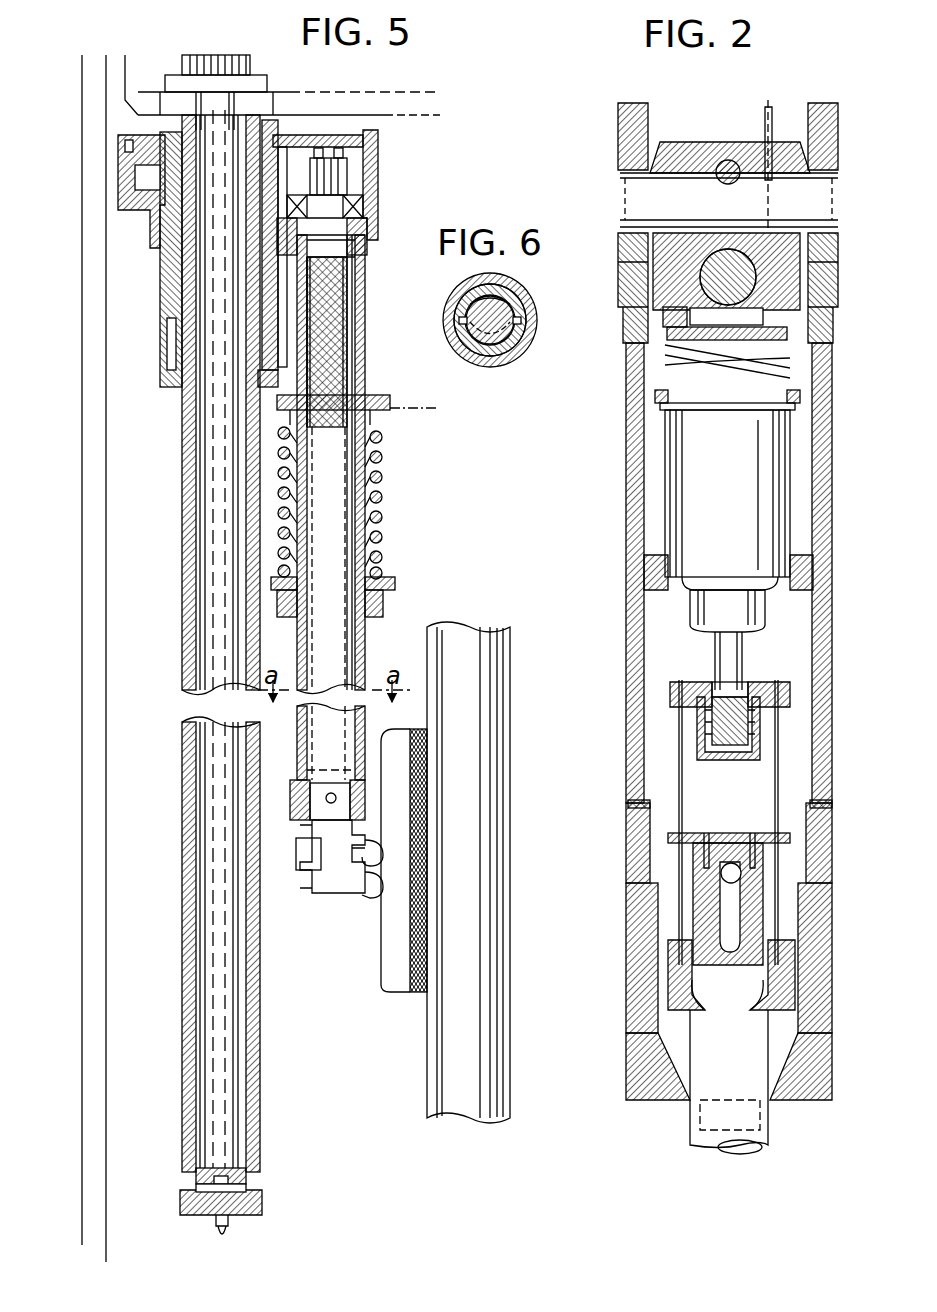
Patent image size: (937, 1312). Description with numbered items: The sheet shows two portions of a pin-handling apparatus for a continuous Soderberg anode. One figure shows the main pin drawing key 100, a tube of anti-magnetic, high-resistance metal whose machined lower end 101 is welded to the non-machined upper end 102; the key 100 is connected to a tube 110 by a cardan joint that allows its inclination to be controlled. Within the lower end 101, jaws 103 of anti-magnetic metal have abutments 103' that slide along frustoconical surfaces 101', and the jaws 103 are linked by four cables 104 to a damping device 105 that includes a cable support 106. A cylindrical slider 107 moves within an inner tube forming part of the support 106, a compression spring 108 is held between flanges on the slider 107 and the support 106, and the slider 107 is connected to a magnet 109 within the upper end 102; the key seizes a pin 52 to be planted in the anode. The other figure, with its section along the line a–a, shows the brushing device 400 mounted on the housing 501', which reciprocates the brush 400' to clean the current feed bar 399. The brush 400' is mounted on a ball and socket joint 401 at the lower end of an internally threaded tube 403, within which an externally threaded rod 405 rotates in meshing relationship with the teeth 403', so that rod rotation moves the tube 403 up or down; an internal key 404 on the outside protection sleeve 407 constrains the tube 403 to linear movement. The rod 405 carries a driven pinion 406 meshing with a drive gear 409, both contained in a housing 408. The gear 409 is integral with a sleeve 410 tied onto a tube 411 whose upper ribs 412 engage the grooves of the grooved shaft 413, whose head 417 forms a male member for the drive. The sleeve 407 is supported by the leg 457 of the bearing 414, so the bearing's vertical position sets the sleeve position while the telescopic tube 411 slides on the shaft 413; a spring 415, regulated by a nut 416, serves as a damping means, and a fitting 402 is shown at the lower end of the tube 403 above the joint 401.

In FIG. 5, the head 417 is at (182, 62).
In FIG. 5, the grooved shaft 413 is at (220, 85).
In FIG. 5, the drive gear 409 is at (290, 157).
In FIG. 5, the housing 501' is at (376, 86).
In FIG. 5, the driven pinion 406 is at (380, 172).
In FIG. 5, the housing 408 is at (380, 205).
In FIG. 5, the ribs 412 is at (165, 212).
In FIG. 5, the internally threaded tube 403 is at (362, 507).
In FIG. 6, the internally threaded tube 403 is at (511, 329).
In FIG. 5, the internal key 404 is at (327, 473).
In FIG. 6, the internal key 404 is at (495, 285).
In FIG. 5, the externally threaded rod 405 is at (331, 290).
In FIG. 6, the externally threaded rod 405 is at (528, 341).
In FIG. 6, the teeth 403' is at (486, 315).
In FIG. 5, the outside protection sleeve 407 is at (353, 333).
In FIG. 6, the outside protection sleeve 407 is at (505, 301).
In FIG. 5, the sleeve 410 is at (167, 357).
In FIG. 5, the bearing 414 is at (410, 408).
In FIG. 5, the leg 457 is at (400, 420).
In FIG. 5, the brushing device 400 is at (460, 469).
In FIG. 5, the tube 411 is at (184, 474).
In FIG. 5, the spring 415 is at (380, 503).
In FIG. 5, the nut 416 is at (383, 602).
In FIG. 5, the coupling block 402 is at (338, 798).
In FIG. 5, the ball and socket joint 401 is at (383, 857).
In FIG. 5, the brush 400' is at (376, 884).
In FIG. 5, the current feed bar 399 is at (455, 1044).
In FIG. 2, the tube 110 is at (820, 134).
In FIG. 2, the upper end 102 is at (825, 454).
In FIG. 2, the magnet 109 is at (763, 505).
In FIG. 2, the main pin drawing key 100 is at (605, 600).
In FIG. 2, the cable support 106 is at (790, 692).
In FIG. 2, the damping device 105 is at (668, 725).
In FIG. 2, the compression spring 108 is at (753, 735).
In FIG. 2, the cylindrical slider 107 is at (733, 748).
In FIG. 2, the cables 104 is at (778, 852).
In FIG. 2, the frustoconical surfaces 101' is at (697, 879).
In FIG. 2, the jaws 103 is at (779, 975).
In FIG. 2, the nozzle chamfer 103' is at (727, 1012).
In FIG. 2, the lower end 101 is at (757, 951).
In FIG. 2, the pins 52 is at (755, 1120).